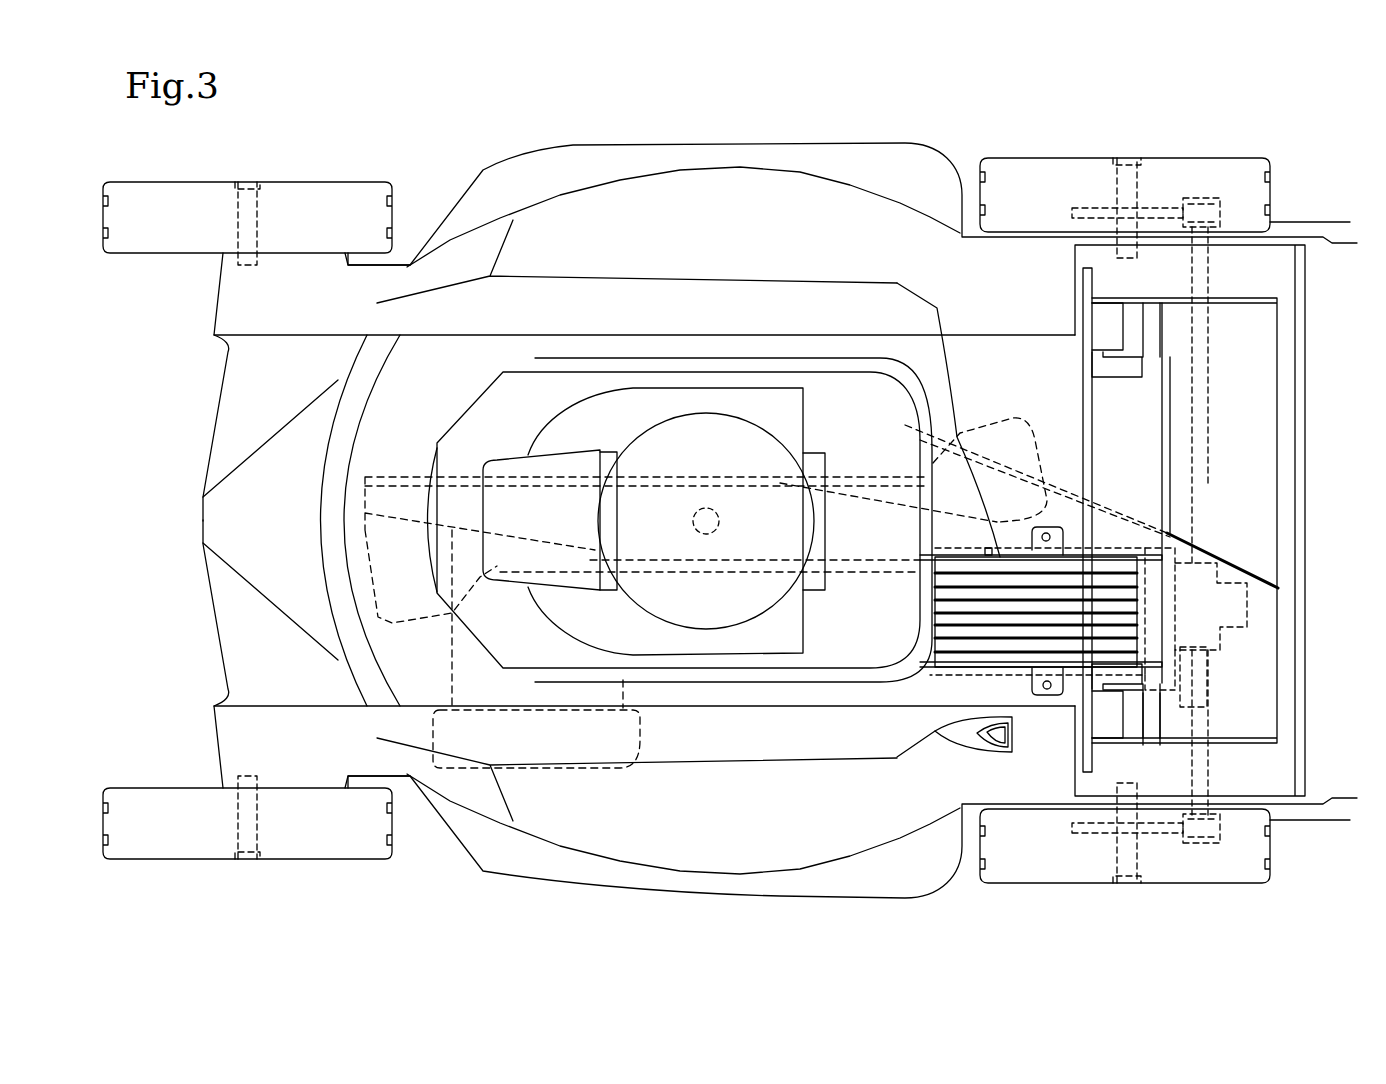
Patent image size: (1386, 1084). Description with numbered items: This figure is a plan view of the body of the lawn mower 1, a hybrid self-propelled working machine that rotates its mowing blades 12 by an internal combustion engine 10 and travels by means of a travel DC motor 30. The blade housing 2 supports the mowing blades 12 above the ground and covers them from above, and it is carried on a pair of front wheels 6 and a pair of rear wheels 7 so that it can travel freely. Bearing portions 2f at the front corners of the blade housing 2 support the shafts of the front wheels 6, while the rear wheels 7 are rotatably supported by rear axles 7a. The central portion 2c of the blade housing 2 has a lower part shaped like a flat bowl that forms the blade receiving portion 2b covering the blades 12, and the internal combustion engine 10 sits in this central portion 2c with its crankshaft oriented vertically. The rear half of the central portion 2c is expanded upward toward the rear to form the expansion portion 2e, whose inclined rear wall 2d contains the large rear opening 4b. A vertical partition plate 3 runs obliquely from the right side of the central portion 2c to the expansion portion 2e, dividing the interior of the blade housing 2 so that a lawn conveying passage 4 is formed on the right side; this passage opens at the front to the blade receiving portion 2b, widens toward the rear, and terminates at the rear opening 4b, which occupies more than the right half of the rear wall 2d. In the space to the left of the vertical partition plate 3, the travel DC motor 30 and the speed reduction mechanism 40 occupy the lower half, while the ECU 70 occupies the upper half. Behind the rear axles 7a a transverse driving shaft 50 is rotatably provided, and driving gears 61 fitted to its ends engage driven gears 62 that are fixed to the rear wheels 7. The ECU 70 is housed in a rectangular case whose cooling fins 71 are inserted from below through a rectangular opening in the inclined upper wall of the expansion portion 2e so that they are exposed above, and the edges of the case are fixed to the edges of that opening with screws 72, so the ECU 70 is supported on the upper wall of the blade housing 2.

The lawn mower 1 is at (497, 139).
The blade housing 2 is at (735, 230).
The blade receiving portion 2b is at (570, 873).
The central portion 2c is at (672, 348).
The rear wall 2d is at (1245, 653).
The expansion portion 2e is at (985, 367).
The bearing portion 2f is at (218, 270).
The vertical partition plate 3 is at (1120, 513).
The lawn conveying passage 4 is at (1055, 390).
The rear opening 4b is at (1243, 438).
The front wheel 6 is at (133, 255).
The rear wheel 7 is at (1272, 193).
The rear axle 7a is at (1117, 188).
The internal combustion engine 10 is at (587, 430).
The mowing blade 12 is at (407, 463).
The travel DC motor 30 is at (1180, 700).
The speed reduction mechanism 40 is at (1247, 602).
The driving shaft 50 is at (1210, 487).
The driving gear 61 is at (1223, 205).
The driven gear 62 is at (1070, 207).
The ECU 70 is at (1172, 630).
The cooling fin 71 is at (1035, 652).
The screw 72 is at (1020, 672).